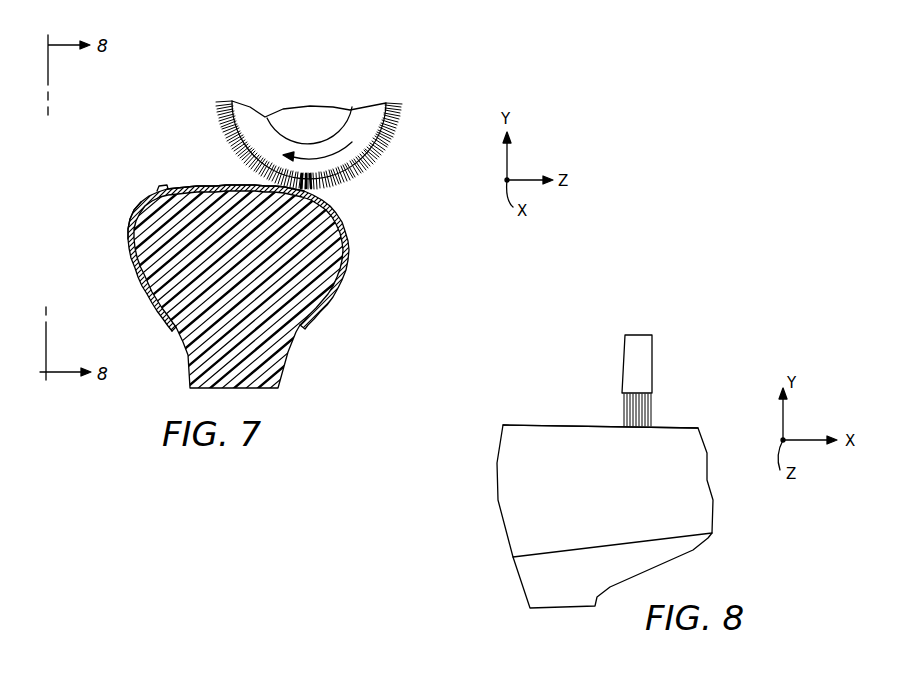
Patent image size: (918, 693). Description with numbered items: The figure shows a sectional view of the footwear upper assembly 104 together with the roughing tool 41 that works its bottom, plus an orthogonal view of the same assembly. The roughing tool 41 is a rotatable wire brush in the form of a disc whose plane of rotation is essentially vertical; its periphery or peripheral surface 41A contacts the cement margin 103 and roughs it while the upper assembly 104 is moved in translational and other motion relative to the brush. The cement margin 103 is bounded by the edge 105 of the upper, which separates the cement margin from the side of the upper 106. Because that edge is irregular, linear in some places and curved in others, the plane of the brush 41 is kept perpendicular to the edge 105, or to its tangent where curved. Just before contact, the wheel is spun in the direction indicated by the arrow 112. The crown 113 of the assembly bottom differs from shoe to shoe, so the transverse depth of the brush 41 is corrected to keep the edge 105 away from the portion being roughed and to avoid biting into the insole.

In FIG. 7, the roughing tool 41 is at (283, 134).
In FIG. 8, the roughing tool 41 is at (653, 368).
In FIG. 7, the peripheral surface 41A is at (219, 123).
In FIG. 7, the cement margin 103 is at (162, 189).
In FIG. 7, the footwear upper assembly 104 is at (144, 307).
In FIG. 8, the footwear upper assembly 104 is at (697, 412).
In FIG. 7, the edge of the upper 105 is at (137, 203).
In FIG. 8, the edge of the upper 105 is at (538, 425).
In FIG. 7, the side of the upper 106 is at (128, 225).
In FIG. 7, the arrow indicating direction of wheel spin 112 is at (305, 160).
In FIG. 7, the crown 113 is at (219, 187).